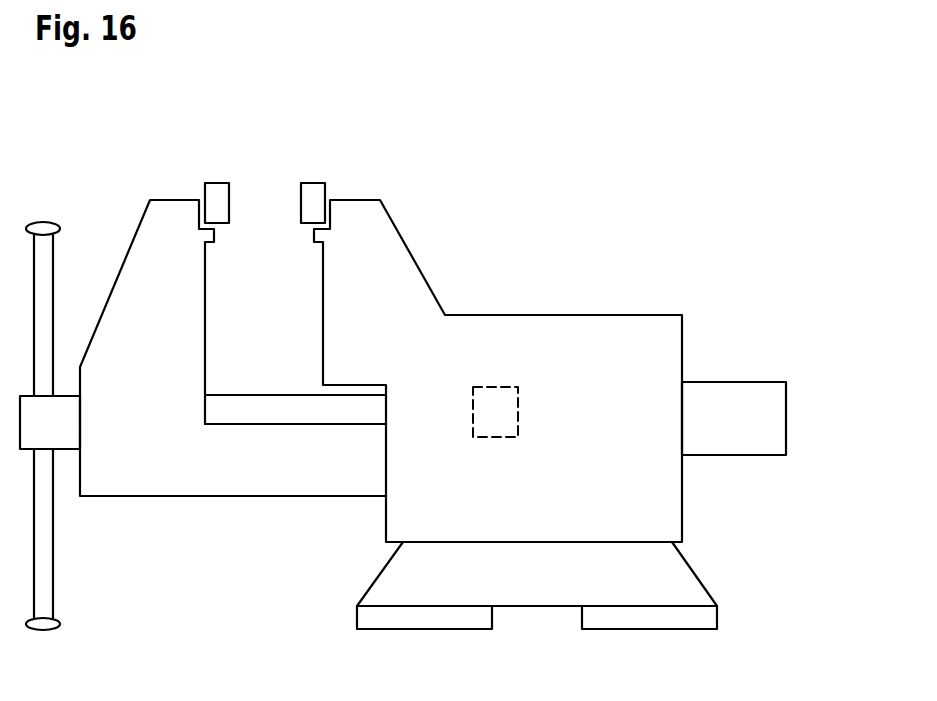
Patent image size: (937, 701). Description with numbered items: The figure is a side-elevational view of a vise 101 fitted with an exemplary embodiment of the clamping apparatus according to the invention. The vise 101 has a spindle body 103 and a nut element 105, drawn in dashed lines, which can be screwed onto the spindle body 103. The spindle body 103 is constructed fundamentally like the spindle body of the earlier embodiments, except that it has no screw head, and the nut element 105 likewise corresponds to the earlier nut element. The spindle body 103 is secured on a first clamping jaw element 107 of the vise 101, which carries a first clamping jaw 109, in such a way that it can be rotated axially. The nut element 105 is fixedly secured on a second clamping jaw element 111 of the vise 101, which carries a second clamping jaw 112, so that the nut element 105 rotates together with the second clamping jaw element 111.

The vise 101 is at (550, 362).
The spindle body 103 is at (324, 413).
The nut element 105 is at (497, 400).
The first clamping jaw element 107 is at (199, 473).
The first clamping jaw 109 is at (218, 203).
The second clamping jaw element 111 is at (472, 345).
The second clamping jaw 112 is at (316, 207).